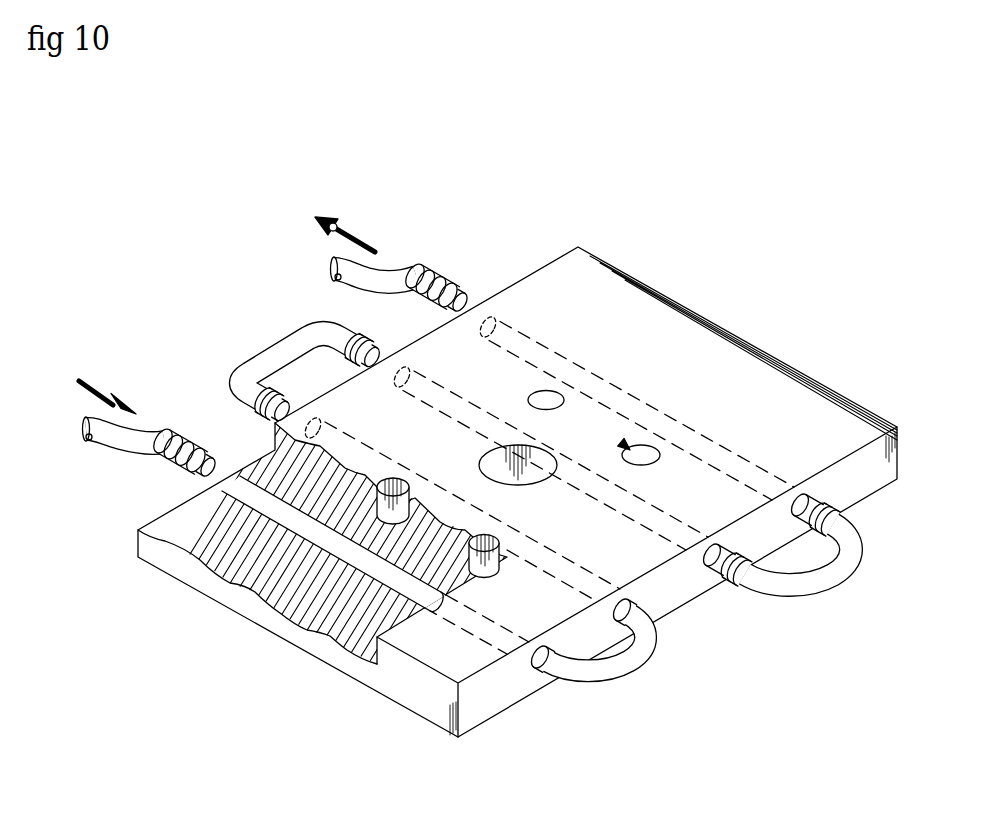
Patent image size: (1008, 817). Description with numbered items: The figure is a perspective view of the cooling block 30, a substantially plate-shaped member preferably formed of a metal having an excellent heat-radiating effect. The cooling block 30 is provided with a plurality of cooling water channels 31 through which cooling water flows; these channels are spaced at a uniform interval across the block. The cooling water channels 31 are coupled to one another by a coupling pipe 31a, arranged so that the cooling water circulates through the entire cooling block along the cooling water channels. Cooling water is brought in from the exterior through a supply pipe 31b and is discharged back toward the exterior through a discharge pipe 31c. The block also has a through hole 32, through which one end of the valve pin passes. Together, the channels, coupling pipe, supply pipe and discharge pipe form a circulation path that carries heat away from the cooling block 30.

The cooling block 30 is at (739, 326).
The cooling water channels 31 is at (671, 527).
The coupling pipe 31a is at (781, 592).
The supply pipe 31b is at (117, 445).
The discharge pipe 31c is at (417, 273).
The through hole 32 is at (537, 385).